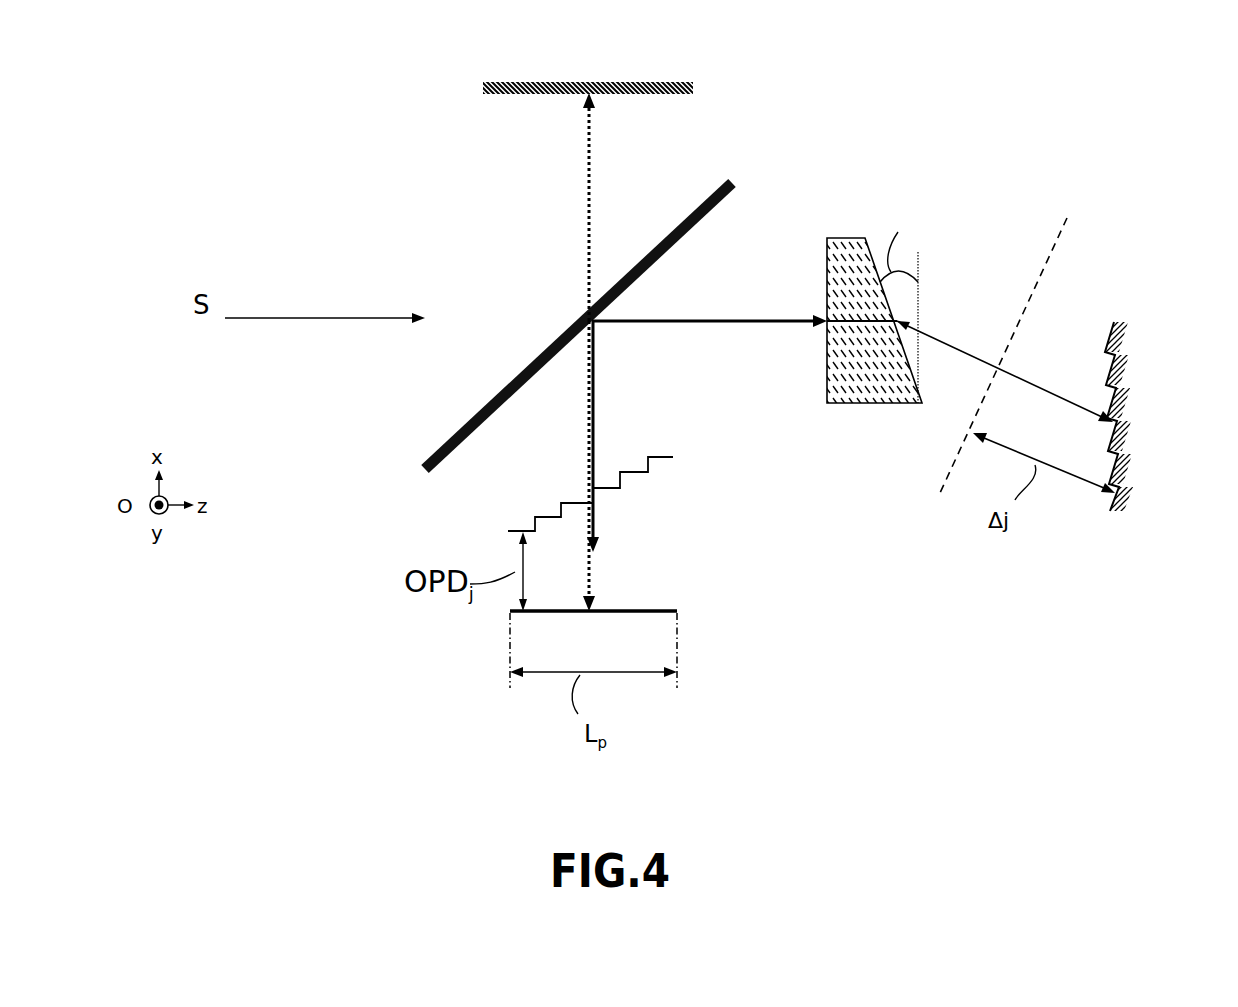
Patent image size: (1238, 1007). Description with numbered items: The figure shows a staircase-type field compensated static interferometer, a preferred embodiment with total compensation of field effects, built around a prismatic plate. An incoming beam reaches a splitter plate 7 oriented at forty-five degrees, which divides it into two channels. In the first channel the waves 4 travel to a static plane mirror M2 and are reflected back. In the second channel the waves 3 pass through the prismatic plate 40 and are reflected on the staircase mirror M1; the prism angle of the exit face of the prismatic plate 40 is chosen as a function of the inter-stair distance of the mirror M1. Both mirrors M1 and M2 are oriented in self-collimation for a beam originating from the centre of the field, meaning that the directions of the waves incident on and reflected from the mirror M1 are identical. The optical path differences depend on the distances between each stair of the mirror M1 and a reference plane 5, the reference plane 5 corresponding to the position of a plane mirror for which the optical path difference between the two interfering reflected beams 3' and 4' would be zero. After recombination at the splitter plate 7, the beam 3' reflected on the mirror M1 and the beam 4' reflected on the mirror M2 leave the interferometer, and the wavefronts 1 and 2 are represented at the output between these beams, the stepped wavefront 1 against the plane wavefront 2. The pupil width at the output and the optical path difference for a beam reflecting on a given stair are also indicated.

The wavefront 1 is at (675, 465).
The wavefront 2 is at (625, 603).
The waves 3 is at (744, 356).
The reflected beam 3' is at (626, 436).
The waves 4 is at (553, 207).
The reflected beam 4' is at (540, 466).
The reference plane 5 is at (1070, 222).
The splitter plate 7 is at (445, 442).
The prismatic plate 40 is at (848, 426).
The mirror M1 is at (1130, 440).
The mirror M2 is at (700, 88).